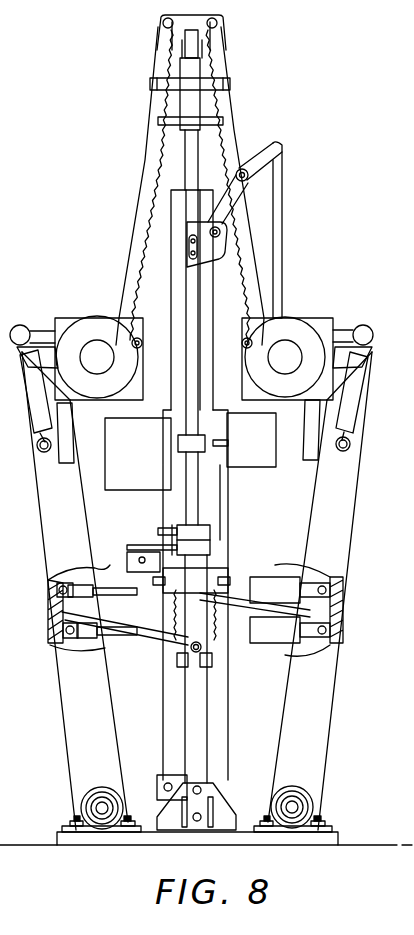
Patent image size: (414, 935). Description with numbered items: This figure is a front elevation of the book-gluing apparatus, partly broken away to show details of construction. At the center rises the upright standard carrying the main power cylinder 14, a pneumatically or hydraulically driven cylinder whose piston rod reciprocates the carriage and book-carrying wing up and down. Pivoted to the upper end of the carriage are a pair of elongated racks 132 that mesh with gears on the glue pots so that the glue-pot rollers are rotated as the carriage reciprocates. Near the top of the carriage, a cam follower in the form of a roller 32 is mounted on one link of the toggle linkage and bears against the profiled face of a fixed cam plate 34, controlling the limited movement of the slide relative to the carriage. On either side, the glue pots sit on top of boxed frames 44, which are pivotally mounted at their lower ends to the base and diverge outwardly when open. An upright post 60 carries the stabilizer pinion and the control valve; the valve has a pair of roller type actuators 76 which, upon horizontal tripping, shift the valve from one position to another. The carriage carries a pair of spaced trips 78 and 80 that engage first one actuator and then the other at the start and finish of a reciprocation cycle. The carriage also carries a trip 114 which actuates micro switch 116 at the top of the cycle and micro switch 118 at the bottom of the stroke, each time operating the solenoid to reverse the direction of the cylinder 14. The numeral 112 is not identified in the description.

The power cylinder 14 is at (168, 307).
The elongated racks 132 is at (120, 259).
The roller 32 is at (244, 168).
The cam plate 34 is at (268, 227).
The boxed frame 44 is at (320, 728).
The trip 78 is at (228, 443).
The trip 80 is at (173, 530).
The trip 114 is at (140, 545).
The micro switch 116 is at (133, 564).
The roller type actuators 76 is at (158, 582).
The column tube 112 is at (221, 698).
The post 60 is at (198, 752).
The micro switch 118 is at (177, 780).